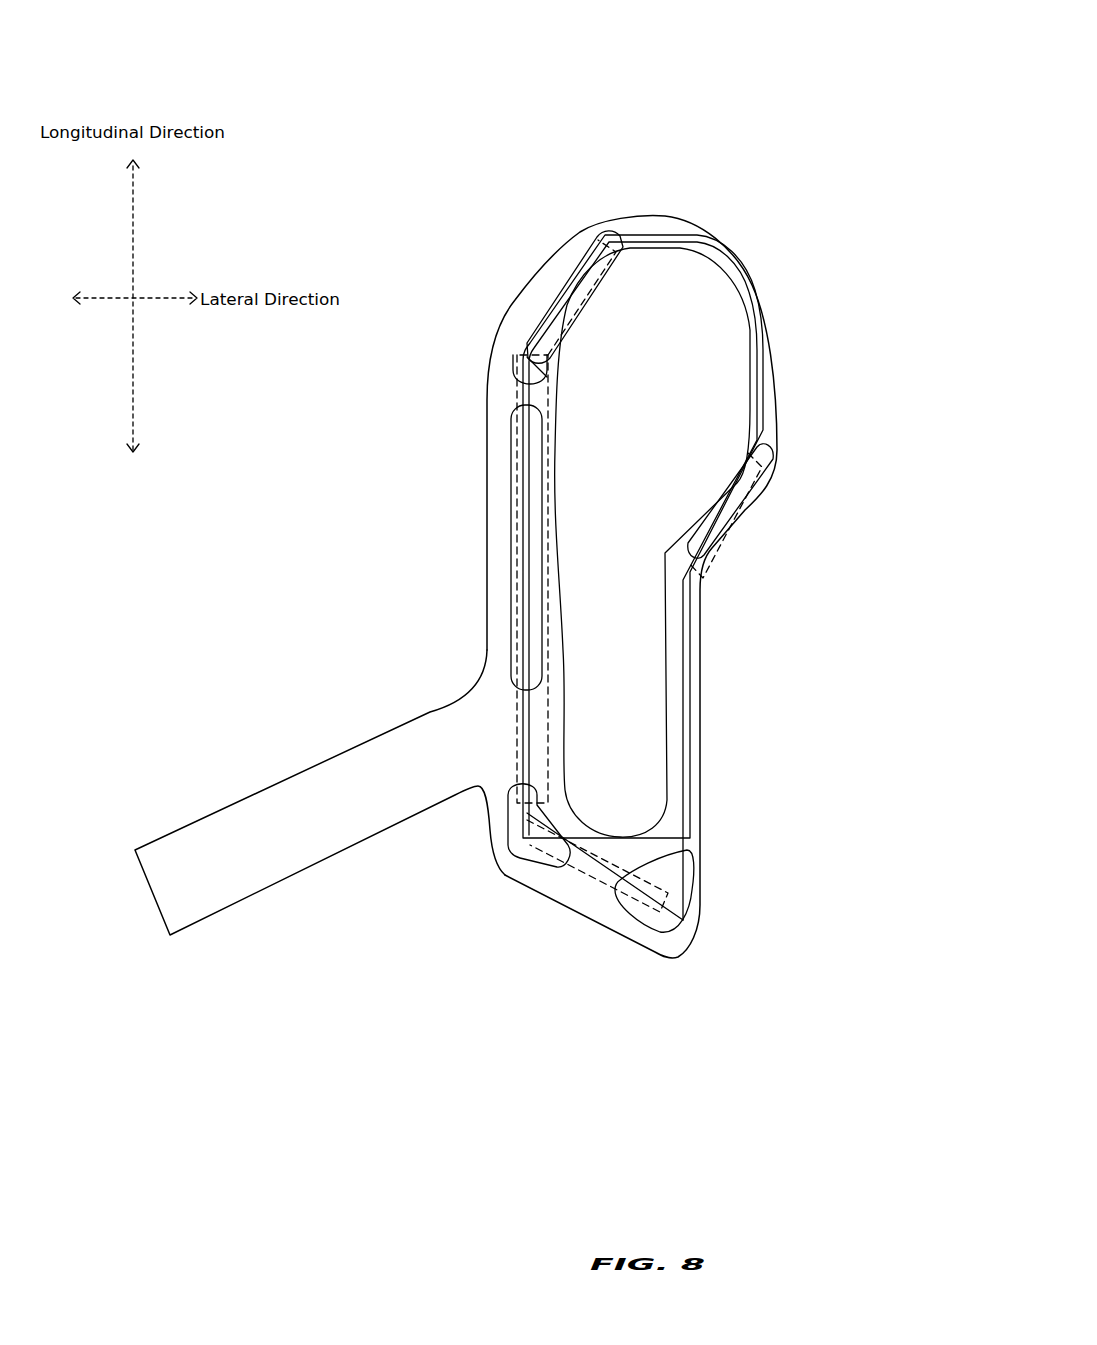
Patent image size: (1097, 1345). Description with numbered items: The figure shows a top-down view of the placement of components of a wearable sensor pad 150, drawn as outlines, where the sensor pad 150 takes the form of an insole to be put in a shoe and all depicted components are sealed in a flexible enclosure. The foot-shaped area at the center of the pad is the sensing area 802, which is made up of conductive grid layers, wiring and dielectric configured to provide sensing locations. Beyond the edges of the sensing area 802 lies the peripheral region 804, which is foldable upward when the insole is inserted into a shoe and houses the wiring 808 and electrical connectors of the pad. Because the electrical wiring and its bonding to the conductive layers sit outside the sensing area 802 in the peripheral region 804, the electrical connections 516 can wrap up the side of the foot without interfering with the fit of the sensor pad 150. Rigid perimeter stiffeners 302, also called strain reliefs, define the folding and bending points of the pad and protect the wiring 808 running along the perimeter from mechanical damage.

The sensor pad 150 is at (893, 110).
The perimeter stiffener 302 is at (513, 687).
The electrical connection 516 is at (267, 790).
The sensing area 802 is at (660, 414).
The peripheral region 804 is at (745, 693).
The wiring 808 is at (757, 900).